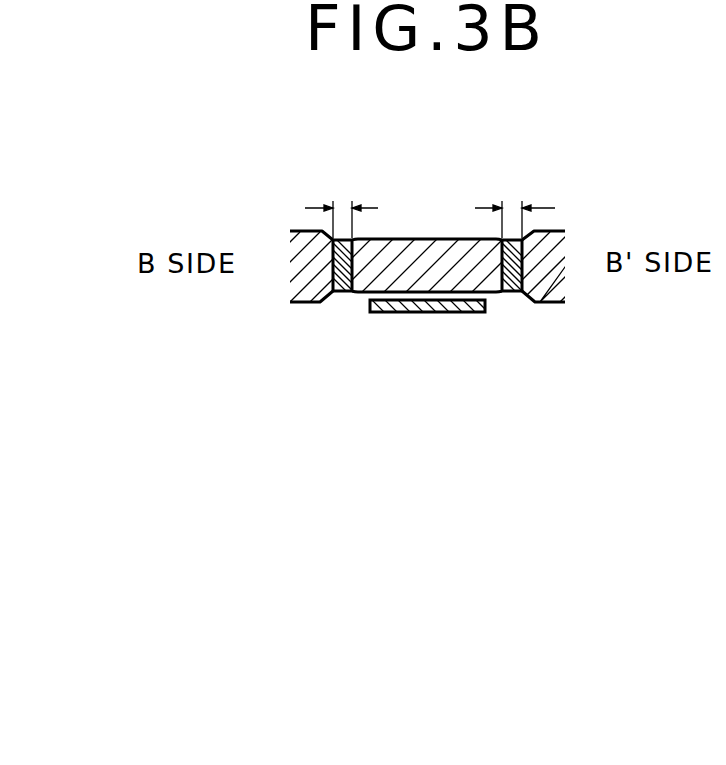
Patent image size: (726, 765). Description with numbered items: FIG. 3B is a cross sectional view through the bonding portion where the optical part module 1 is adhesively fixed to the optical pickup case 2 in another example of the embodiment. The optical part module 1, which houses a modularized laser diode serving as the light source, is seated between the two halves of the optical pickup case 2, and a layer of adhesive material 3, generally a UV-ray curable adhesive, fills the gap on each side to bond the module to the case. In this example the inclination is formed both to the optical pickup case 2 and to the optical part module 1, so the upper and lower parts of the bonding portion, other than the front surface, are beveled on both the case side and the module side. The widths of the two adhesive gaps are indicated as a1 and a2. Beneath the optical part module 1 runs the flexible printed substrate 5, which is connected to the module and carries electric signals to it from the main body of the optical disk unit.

The optical part module 1 is at (445, 253).
The optical pickup case 2 is at (310, 254).
The adhesive material 3 is at (340, 291).
The flexible printed substrate 5 is at (425, 307).
The joint width a1 is at (341, 202).
The joint width a2 is at (515, 202).